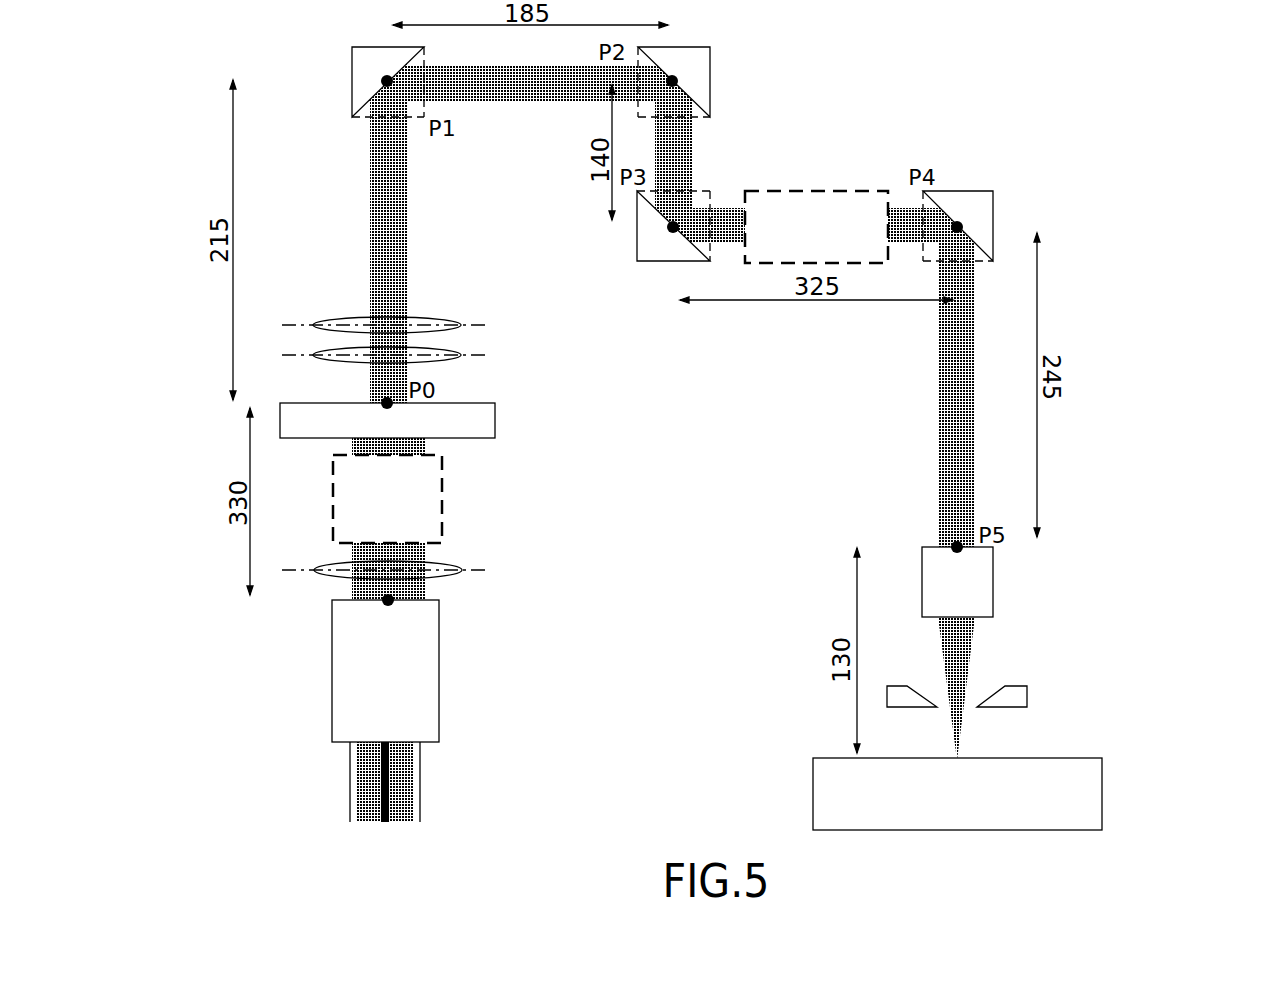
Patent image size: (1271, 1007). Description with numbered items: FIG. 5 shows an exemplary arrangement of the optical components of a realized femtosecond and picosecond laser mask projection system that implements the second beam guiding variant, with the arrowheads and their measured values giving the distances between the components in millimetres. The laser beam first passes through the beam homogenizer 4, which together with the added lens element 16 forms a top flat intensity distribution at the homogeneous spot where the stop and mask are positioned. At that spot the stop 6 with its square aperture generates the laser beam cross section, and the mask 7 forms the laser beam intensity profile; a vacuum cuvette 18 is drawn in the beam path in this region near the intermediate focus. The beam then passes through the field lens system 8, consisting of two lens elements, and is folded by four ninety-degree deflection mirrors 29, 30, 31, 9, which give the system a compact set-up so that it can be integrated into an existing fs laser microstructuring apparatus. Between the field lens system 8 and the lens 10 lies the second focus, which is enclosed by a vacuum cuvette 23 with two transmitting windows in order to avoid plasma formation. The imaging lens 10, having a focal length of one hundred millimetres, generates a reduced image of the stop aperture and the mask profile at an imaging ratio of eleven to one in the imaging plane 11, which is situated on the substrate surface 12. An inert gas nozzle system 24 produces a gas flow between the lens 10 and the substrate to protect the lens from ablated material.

The homogenizer 4 is at (439, 685).
The stop 6 is at (444, 408).
The mask 7 is at (495, 420).
The field lens system 8 is at (488, 355).
The deflection mirror 9 is at (953, 191).
The lens 10 is at (993, 587).
The imaging plane 11 is at (1021, 792).
The substrate surface 12 is at (1102, 797).
The added lens element 16 is at (462, 568).
The vacuum cuvette 18 is at (442, 510).
The vacuum cuvette 23 is at (810, 191).
The inert gas nozzle system 24 is at (1027, 698).
The deflection mirror 29 is at (423, 82).
The deflection mirror 30 is at (710, 78).
The deflection mirror 31 is at (708, 192).